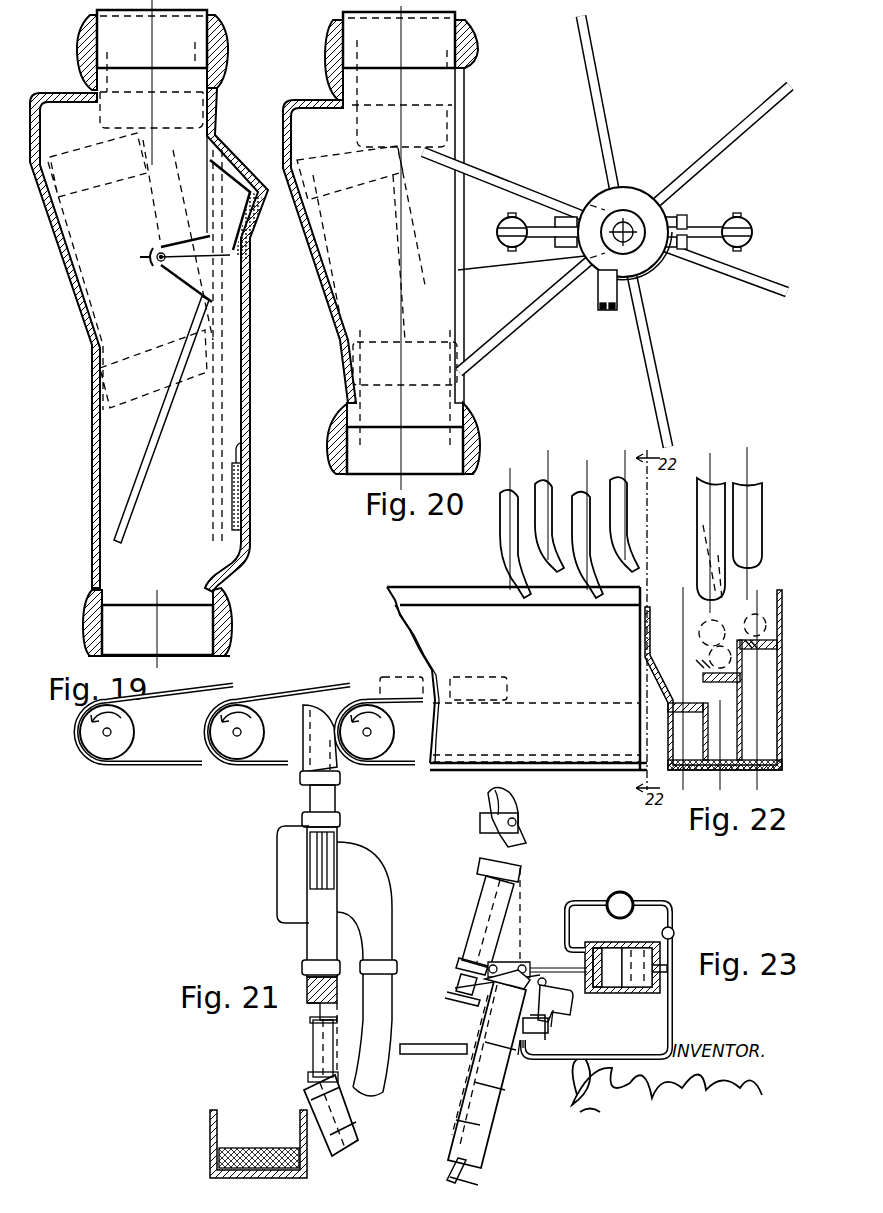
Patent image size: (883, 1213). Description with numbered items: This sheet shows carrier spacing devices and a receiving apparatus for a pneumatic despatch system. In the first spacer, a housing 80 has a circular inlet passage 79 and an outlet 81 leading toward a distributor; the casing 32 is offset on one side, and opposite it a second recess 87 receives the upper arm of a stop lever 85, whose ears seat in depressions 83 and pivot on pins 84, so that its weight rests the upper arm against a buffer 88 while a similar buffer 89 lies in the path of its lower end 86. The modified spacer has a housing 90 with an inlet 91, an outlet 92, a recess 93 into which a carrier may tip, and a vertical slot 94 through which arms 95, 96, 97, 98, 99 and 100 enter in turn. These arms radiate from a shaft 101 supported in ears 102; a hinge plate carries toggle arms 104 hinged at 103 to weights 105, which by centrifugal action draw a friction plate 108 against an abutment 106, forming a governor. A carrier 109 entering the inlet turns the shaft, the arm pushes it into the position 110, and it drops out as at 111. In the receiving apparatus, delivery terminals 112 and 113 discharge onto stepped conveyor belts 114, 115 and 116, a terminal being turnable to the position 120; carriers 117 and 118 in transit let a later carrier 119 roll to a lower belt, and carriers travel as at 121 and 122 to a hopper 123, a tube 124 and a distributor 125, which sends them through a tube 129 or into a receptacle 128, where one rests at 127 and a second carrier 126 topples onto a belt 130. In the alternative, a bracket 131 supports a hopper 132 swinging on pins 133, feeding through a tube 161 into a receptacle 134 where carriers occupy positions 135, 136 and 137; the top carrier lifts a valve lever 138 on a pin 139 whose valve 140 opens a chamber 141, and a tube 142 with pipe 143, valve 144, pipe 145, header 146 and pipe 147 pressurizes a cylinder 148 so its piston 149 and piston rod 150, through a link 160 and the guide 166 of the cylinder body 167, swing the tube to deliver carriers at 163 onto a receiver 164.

In FIG. 19, the casing 32 is at (115, 329).
In FIG. 19, the inlet passage 79 is at (128, 51).
In FIG. 19, the housing 80 is at (174, 69).
In FIG. 19, the outlet 81 is at (181, 622).
In FIG. 19, the depressions 83 is at (195, 226).
In FIG. 19, the pins 84 is at (142, 241).
In FIG. 19, the stop lever 85 is at (161, 419).
In FIG. 19, the flap arm 86 is at (169, 287).
In FIG. 19, the second recess 87 is at (237, 340).
In FIG. 19, the buffer 88 is at (245, 316).
In FIG. 19, the buffer 89 is at (261, 473).
In FIG. 20, the housing 90 is at (372, 312).
In FIG. 20, the inlet 91 is at (421, 79).
In FIG. 20, the outlet 92 is at (392, 450).
In FIG. 20, the recess 93 is at (319, 223).
In FIG. 20, the vertical slot 94 is at (478, 235).
In FIG. 20, the arm 95 is at (502, 176).
In FIG. 20, the arm 96 is at (524, 316).
In FIG. 20, the arm 97 is at (661, 361).
In FIG. 20, the arm 98 is at (726, 283).
In FIG. 20, the arm 99 is at (723, 144).
In FIG. 20, the arm 100 is at (620, 102).
In FIG. 20, the shaft 101 is at (633, 205).
In FIG. 20, the ears 102 is at (610, 231).
In FIG. 20, the hinge 103 is at (619, 237).
In FIG. 20, the toggle arms 104 is at (617, 237).
In FIG. 20, the weights 105 is at (639, 219).
In FIG. 20, the abutment 106 is at (610, 324).
In FIG. 20, the friction plate 108 is at (582, 295).
In FIG. 20, the carrier 109 is at (361, 232).
In FIG. 20, the carrier position 110 is at (428, 181).
In FIG. 20, the carrier position 111 is at (405, 344).
In FIG. 21, the delivery terminal 112 is at (547, 524).
In FIG. 22, the delivery terminal 112 is at (693, 562).
In FIG. 21, the delivery terminal 113 is at (619, 467).
In FIG. 22, the delivery terminal 113 is at (749, 530).
In FIG. 21, the conveyor belt 114 is at (517, 678).
In FIG. 22, the conveyor belt 114 is at (709, 670).
In FIG. 21, the conveyor belt 115 is at (249, 715).
In FIG. 22, the conveyor belt 115 is at (735, 708).
In FIG. 21, the conveyor belt 116 is at (237, 728).
In FIG. 22, the conveyor belt 116 is at (723, 679).
In FIG. 22, the carrier 117 is at (747, 613).
In FIG. 22, the carrier 118 is at (696, 649).
In FIG. 22, the carrier 119 is at (696, 624).
In FIG. 22, the terminal position 120 is at (680, 566).
In FIG. 21, the carrier position 121 is at (401, 666).
In FIG. 21, the carrier position 122 is at (478, 666).
In FIG. 21, the hopper 123 is at (283, 754).
In FIG. 21, the tube 124 is at (345, 806).
In FIG. 21, the distributor 125 is at (353, 901).
In FIG. 21, the second carrier 126 is at (299, 1042).
In FIG. 21, the carrier position 127 is at (354, 1115).
In FIG. 21, the delivery receptacle 128 is at (301, 1005).
In FIG. 21, the tube 129 is at (397, 1035).
In FIG. 21, the movable belt 130 is at (258, 1144).
In FIG. 23, the rigid bracket 131 is at (478, 823).
In FIG. 23, the hopper 132 is at (520, 863).
In FIG. 23, the pins 133 is at (523, 818).
In FIG. 23, the receptacle 134 is at (500, 1074).
In FIG. 23, the carrier position 135 is at (452, 1160).
In FIG. 23, the carrier position 136 is at (460, 1065).
In FIG. 23, the carrier position 137 is at (490, 1001).
In FIG. 23, the valve lever 138 is at (578, 1008).
In FIG. 23, the pin 139 is at (558, 952).
In FIG. 23, the valve 140 is at (562, 1033).
In FIG. 23, the chamber 141 is at (538, 1060).
In FIG. 23, the tube 142 is at (628, 1043).
In FIG. 23, the pipe 143 is at (644, 1012).
In FIG. 23, the valve 144 is at (693, 925).
In FIG. 23, the pipe 145 is at (611, 969).
In FIG. 23, the header 146 is at (630, 890).
In FIG. 23, the pipe 147 is at (587, 888).
In FIG. 23, the cylinder 148 is at (630, 955).
In FIG. 23, the piston 149 is at (620, 956).
In FIG. 23, the piston rod 150 is at (555, 911).
In FIG. 23, the link 160 is at (537, 922).
In FIG. 23, the tube 161 is at (476, 937).
In FIG. 23, the delivery position 163 is at (480, 975).
In FIG. 23, the receiver 164 is at (433, 1062).
In FIG. 22, the guide 166 is at (677, 600).
In FIG. 23, the cylinder body 167 is at (443, 931).